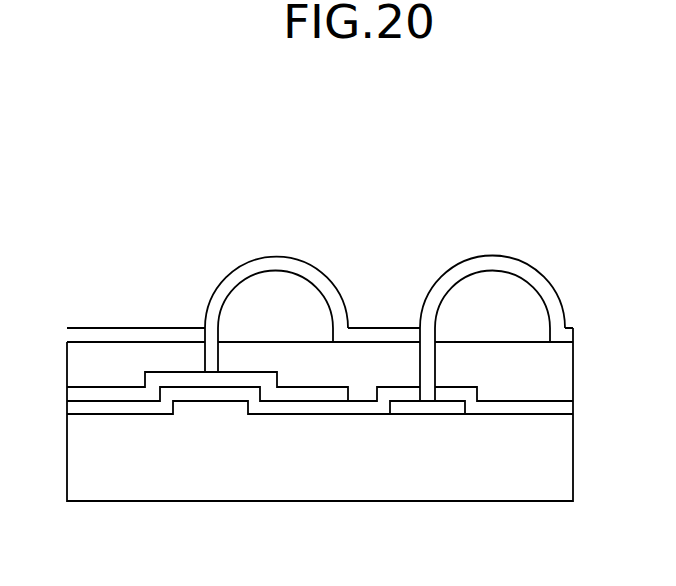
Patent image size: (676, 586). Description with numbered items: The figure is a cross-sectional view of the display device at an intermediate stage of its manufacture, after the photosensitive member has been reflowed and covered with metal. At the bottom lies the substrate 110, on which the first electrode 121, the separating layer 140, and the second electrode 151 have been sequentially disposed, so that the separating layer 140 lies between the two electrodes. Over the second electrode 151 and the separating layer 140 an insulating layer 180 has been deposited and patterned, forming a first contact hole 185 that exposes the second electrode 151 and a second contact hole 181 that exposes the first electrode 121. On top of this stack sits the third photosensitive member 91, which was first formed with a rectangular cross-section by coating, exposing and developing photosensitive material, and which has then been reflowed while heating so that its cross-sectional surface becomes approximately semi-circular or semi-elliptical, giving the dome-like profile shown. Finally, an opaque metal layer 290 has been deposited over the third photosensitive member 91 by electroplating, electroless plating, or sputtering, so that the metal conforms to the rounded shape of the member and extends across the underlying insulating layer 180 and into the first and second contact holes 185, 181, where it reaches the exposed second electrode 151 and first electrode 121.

The third photosensitive member 91 is at (258, 295).
The substrate 110 is at (275, 478).
The first electrode 121 is at (416, 406).
The separating layer 140 is at (345, 407).
The second electrode 151 is at (102, 393).
The insulating layer 180 is at (528, 368).
The second contact hole 181 is at (425, 360).
The first contact hole 185 is at (218, 358).
The opaque metal layer 290 is at (113, 335).